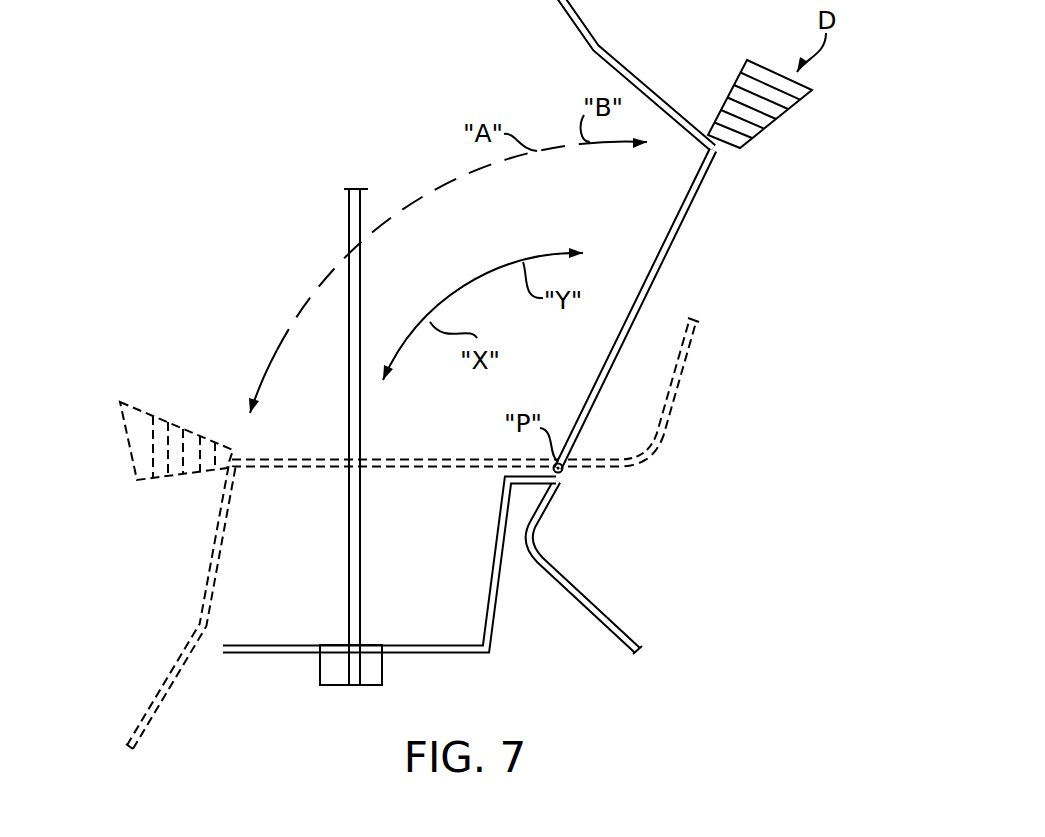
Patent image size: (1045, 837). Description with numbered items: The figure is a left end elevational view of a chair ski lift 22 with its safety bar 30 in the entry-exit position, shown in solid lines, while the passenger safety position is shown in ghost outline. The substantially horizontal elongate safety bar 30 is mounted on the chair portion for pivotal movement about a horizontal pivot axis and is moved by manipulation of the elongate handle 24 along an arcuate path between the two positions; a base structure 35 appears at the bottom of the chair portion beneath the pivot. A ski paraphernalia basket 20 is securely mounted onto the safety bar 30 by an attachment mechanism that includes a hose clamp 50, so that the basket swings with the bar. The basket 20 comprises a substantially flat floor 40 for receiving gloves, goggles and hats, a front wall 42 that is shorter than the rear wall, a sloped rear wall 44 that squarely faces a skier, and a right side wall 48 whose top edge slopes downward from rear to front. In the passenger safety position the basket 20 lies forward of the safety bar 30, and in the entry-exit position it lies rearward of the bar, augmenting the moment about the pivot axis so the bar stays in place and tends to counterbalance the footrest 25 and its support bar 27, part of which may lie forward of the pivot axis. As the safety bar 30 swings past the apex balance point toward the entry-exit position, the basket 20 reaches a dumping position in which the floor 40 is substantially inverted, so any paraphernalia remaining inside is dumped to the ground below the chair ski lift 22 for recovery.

The ski paraphernalia basket 20 is at (827, 90).
The chair ski lift 22 is at (790, 257).
The elongate handle 24 is at (697, 318).
The footrest 25 is at (127, 745).
The support bar 27 is at (596, 48).
The safety bar 30 is at (722, 158).
The base 35 is at (435, 655).
The floor 40 is at (728, 90).
The front wall 42 is at (728, 152).
The rear wall 44 is at (762, 60).
The right side wall 48 is at (770, 105).
The hose clamp 50 is at (713, 150).